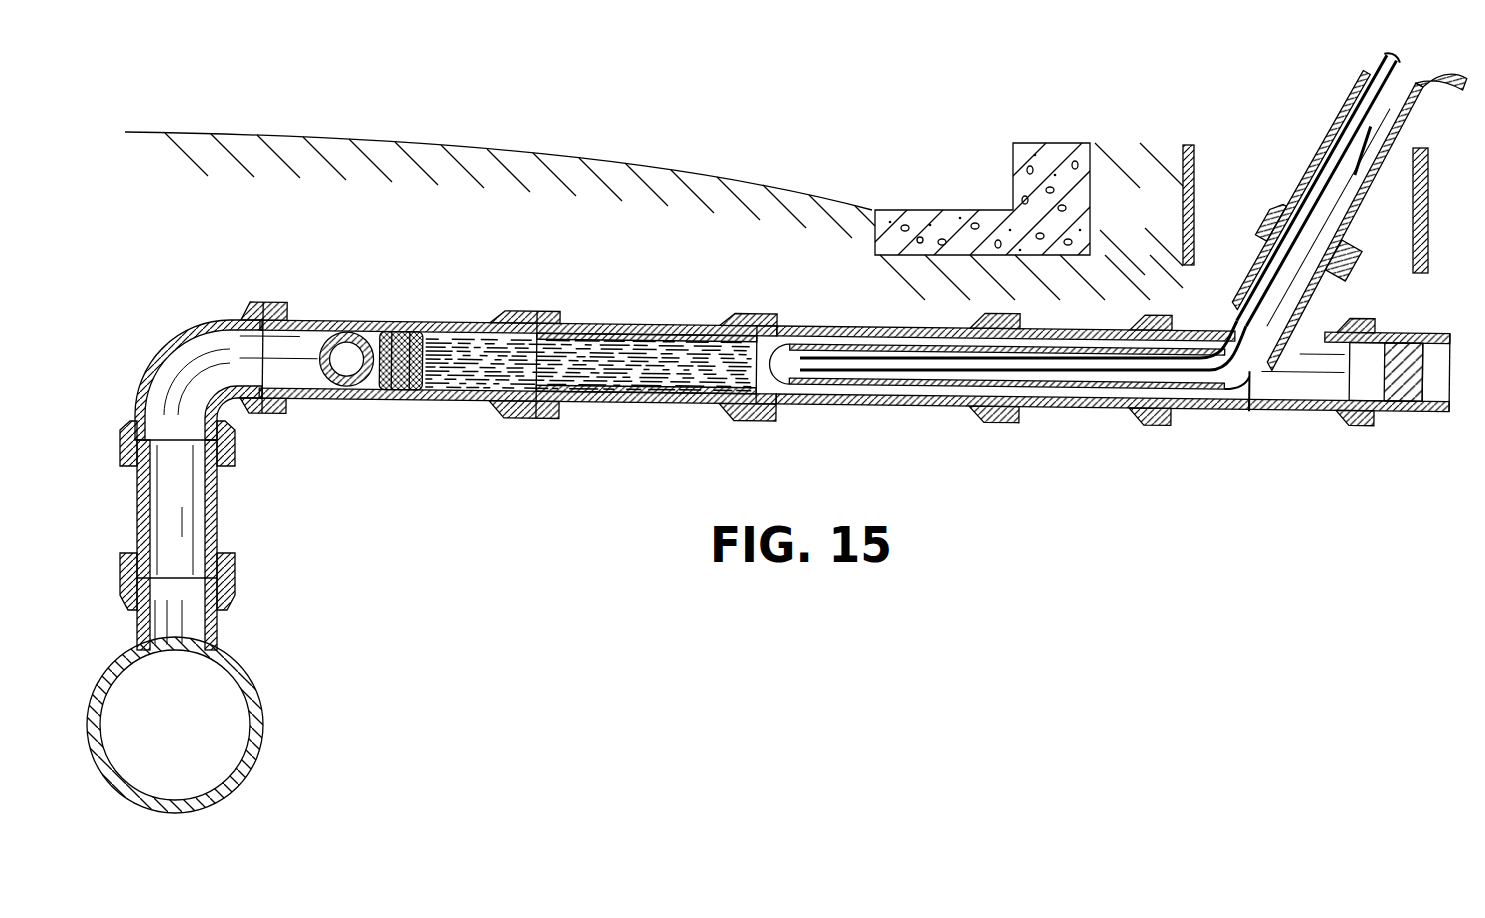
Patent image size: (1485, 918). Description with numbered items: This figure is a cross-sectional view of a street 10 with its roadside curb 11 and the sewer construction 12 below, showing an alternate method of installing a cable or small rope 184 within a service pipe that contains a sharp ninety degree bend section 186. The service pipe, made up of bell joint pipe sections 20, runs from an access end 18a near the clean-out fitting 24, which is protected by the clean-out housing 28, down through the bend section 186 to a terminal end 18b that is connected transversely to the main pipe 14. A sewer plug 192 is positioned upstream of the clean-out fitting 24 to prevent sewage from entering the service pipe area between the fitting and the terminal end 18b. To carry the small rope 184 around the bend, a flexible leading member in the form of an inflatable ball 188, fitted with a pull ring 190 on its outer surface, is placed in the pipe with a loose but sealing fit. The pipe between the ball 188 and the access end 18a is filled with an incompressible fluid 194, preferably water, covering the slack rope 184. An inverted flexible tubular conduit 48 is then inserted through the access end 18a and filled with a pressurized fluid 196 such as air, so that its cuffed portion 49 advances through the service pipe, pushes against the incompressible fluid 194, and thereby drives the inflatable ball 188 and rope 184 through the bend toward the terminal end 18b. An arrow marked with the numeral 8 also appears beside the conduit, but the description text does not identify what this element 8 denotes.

The street 10 is at (600, 150).
The roadside curb 11 is at (1028, 145).
The clean-out housing 28 is at (1195, 152).
The access end 18a is at (1263, 225).
The terminal end 18b is at (212, 623).
The main pipe 14 is at (260, 698).
The ninety degree bend section 186 is at (225, 427).
The inflatable ball 188 is at (343, 377).
The pull ring 190 is at (383, 355).
The incompressible fluid 194 is at (630, 350).
The cable or small rope 184 is at (605, 398).
The bell joint pipe sections 20 is at (660, 398).
The cuffed portion 49 is at (788, 403).
The sensor assembly 8 is at (1092, 263).
The sewer construction 12 is at (844, 305).
The flexible tubular conduit 48 is at (1058, 403).
The pressurized fluid 196 is at (1212, 375).
The clean-out fitting 24 is at (1285, 410).
The sewer plug 192 is at (1397, 393).